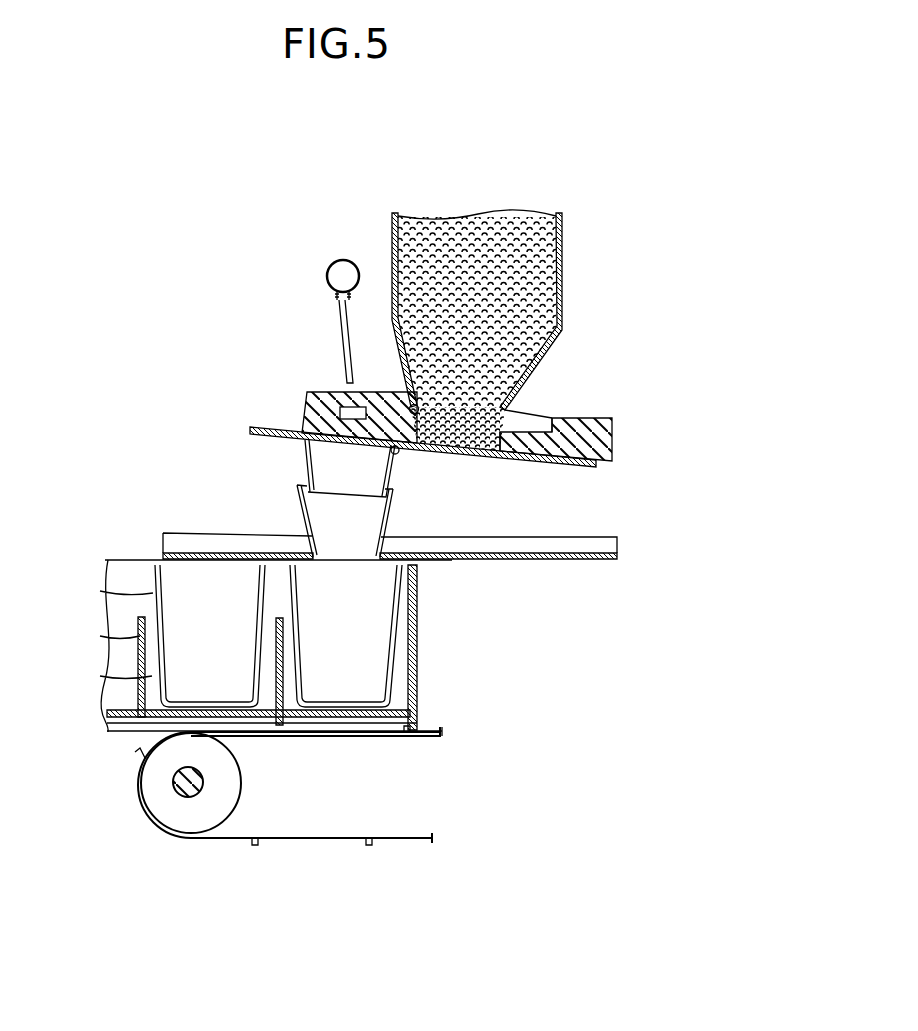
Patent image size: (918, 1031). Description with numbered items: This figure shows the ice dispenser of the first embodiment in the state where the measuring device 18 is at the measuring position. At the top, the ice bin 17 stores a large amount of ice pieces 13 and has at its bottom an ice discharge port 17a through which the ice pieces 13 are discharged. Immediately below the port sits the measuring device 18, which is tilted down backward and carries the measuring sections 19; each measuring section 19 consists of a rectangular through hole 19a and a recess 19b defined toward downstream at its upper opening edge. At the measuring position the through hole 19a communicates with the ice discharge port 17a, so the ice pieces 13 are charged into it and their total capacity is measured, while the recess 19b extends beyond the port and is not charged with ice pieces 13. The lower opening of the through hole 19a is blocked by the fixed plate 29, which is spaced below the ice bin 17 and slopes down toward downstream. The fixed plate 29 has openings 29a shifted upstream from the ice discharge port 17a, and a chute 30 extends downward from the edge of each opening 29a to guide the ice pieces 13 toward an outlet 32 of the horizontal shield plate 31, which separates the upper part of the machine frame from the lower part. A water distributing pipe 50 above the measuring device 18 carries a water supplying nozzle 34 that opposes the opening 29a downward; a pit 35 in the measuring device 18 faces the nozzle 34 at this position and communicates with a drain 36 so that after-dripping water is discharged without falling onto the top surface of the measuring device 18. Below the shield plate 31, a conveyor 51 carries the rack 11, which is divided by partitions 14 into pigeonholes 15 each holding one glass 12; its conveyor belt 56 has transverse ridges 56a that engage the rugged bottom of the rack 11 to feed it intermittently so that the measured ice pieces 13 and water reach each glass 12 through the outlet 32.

The rack 11 is at (420, 622).
The glass 12 is at (155, 600).
The ice pieces 13 is at (489, 233).
The partition 14 is at (138, 641).
The pigeonhole 15 is at (148, 680).
The ice bin 17 is at (563, 263).
The ice discharge port 17a is at (410, 402).
The measuring device 18 is at (616, 438).
The measuring section 19 is at (514, 416).
The through hole 19a is at (494, 457).
The recess 19b is at (553, 420).
The fixed plate 29 is at (583, 468).
The opening 29a is at (398, 452).
The chute 30 is at (305, 468).
The shield plate 31 is at (578, 562).
The outlet 32 is at (388, 532).
The water supplying nozzle 34 is at (343, 352).
The pit 35 is at (336, 392).
The drain 36 is at (313, 412).
The water distributing pipe 50 is at (342, 260).
The conveyor 51 is at (198, 846).
The conveyor belt 56 is at (303, 842).
The transverse ridge 56a is at (392, 737).